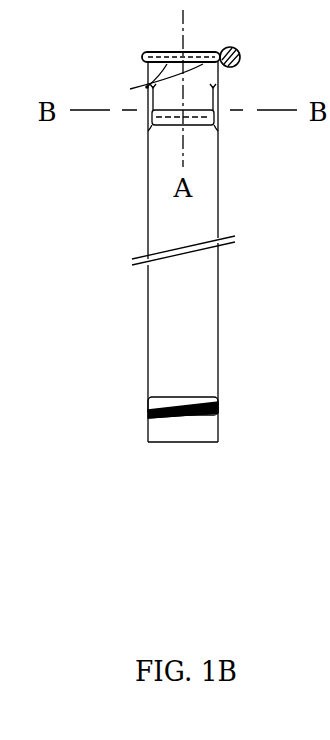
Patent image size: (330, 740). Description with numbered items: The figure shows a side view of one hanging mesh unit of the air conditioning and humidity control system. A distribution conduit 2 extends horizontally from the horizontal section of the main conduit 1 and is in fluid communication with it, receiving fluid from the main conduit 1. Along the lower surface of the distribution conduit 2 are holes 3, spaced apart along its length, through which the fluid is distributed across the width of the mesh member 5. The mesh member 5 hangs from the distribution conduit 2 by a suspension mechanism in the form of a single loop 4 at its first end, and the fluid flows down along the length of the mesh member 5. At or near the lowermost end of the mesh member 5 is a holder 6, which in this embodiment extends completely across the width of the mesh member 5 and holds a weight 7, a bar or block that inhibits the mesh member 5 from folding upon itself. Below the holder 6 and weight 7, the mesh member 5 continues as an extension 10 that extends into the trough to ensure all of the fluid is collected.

The main conduit 1 is at (234, 47).
The distribution conduit 2 is at (150, 52).
The hole 3 is at (147, 87).
The loop 4 is at (218, 95).
The mesh member 5 is at (147, 203).
The holder 6 is at (222, 405).
The weight 7 is at (147, 415).
The extension 10 is at (187, 442).